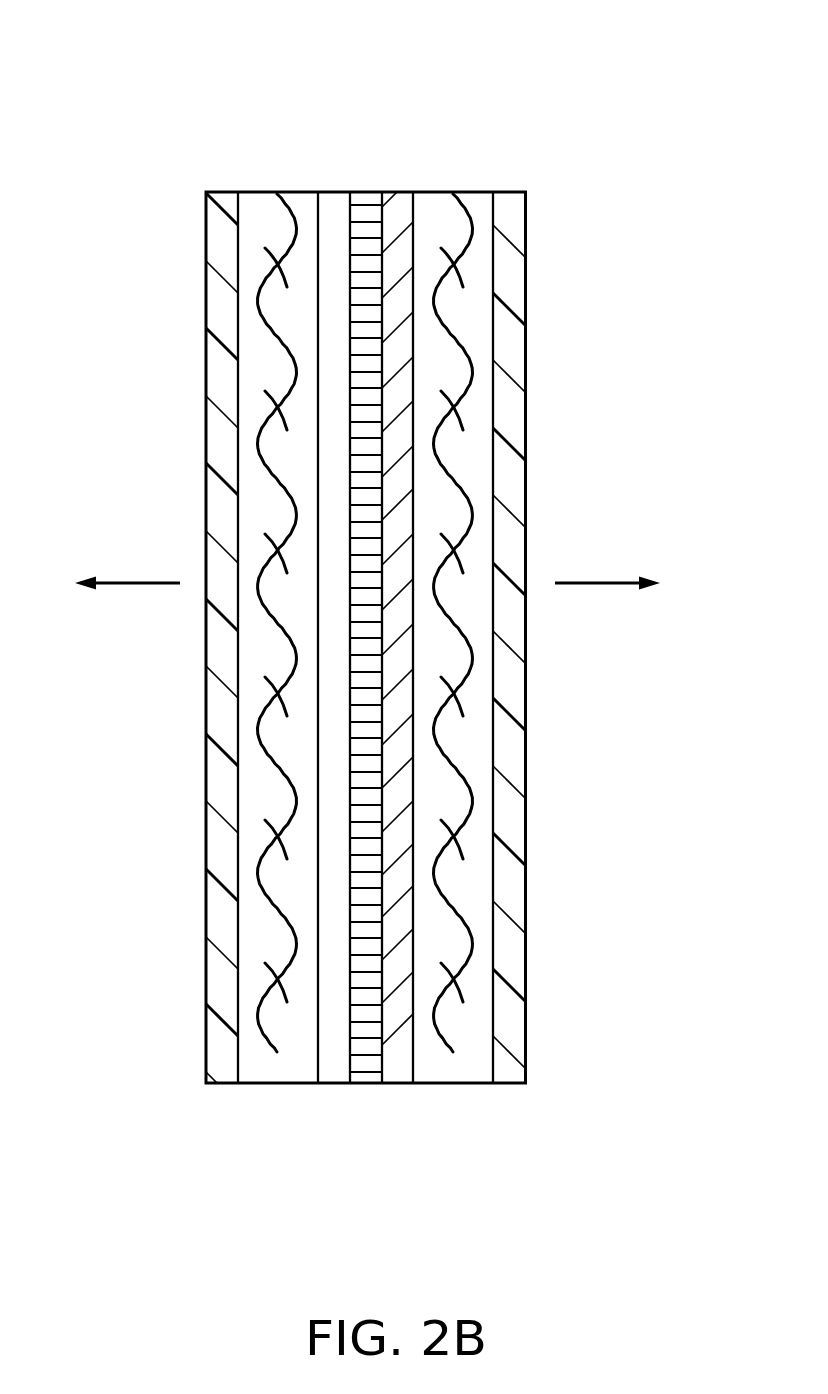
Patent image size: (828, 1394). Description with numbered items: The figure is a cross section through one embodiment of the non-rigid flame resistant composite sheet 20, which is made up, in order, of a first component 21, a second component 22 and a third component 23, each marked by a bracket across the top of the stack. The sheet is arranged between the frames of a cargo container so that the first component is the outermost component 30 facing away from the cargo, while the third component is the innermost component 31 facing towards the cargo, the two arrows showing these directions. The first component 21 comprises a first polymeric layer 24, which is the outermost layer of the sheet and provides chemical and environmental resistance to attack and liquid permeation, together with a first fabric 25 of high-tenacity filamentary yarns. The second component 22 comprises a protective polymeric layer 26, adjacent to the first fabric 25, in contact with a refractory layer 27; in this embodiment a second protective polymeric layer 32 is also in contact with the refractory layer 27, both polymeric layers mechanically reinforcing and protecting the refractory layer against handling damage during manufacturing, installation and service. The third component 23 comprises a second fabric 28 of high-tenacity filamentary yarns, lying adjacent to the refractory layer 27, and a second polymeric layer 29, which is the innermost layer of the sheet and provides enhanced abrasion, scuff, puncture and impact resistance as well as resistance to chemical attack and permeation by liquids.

The non-rigid flame resistant composite sheet 20 is at (399, 86).
The first component 21 is at (525, 172).
The second component 22 is at (318, 172).
The third component 23 is at (318, 172).
The first polymeric layer 24 is at (508, 1083).
The first fabric 25 is at (455, 1083).
The protective polymeric layer 26 is at (397, 1083).
The refractory layer 27 is at (367, 1083).
The second fabric 28 is at (278, 1083).
The second polymeric layer 29 is at (223, 1083).
The outermost component 30 is at (624, 584).
The innermost component 31 is at (112, 584).
The second protective polymeric layer 32 is at (334, 1083).